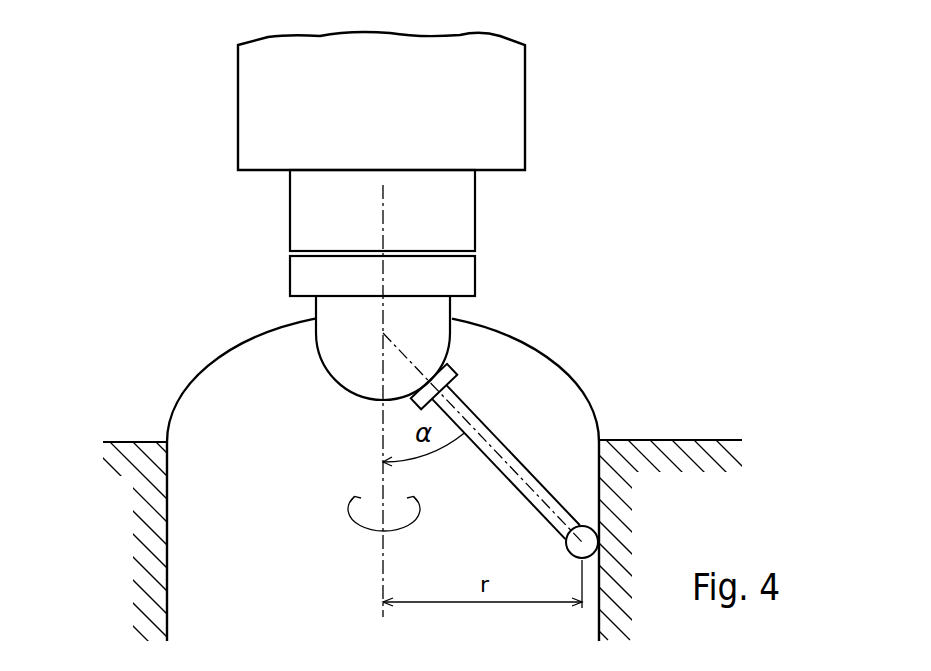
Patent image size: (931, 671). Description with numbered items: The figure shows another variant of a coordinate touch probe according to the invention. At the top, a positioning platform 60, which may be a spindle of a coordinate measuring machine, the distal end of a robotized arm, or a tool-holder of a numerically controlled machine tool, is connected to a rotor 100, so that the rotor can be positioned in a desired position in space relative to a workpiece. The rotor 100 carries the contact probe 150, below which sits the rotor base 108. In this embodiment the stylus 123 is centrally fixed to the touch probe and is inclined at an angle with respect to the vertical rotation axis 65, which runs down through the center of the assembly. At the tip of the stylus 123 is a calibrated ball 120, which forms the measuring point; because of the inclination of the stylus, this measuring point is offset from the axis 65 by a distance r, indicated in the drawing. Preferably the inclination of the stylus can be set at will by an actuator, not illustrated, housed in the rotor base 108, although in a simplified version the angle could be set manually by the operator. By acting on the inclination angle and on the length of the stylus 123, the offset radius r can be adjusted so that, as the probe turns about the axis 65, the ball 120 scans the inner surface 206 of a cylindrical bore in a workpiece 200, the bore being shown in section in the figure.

The positioning platform 60 is at (255, 125).
The rotor 100 is at (310, 221).
The contact probe 150 is at (320, 277).
The rotor base 108 is at (358, 358).
The stylus 123 is at (498, 437).
The calibrated ball 120 is at (575, 540).
The vertical rotation axis 65 is at (380, 585).
The workpiece 200 is at (688, 448).
The inner surface of a cylindrical bore 206 is at (299, 480).